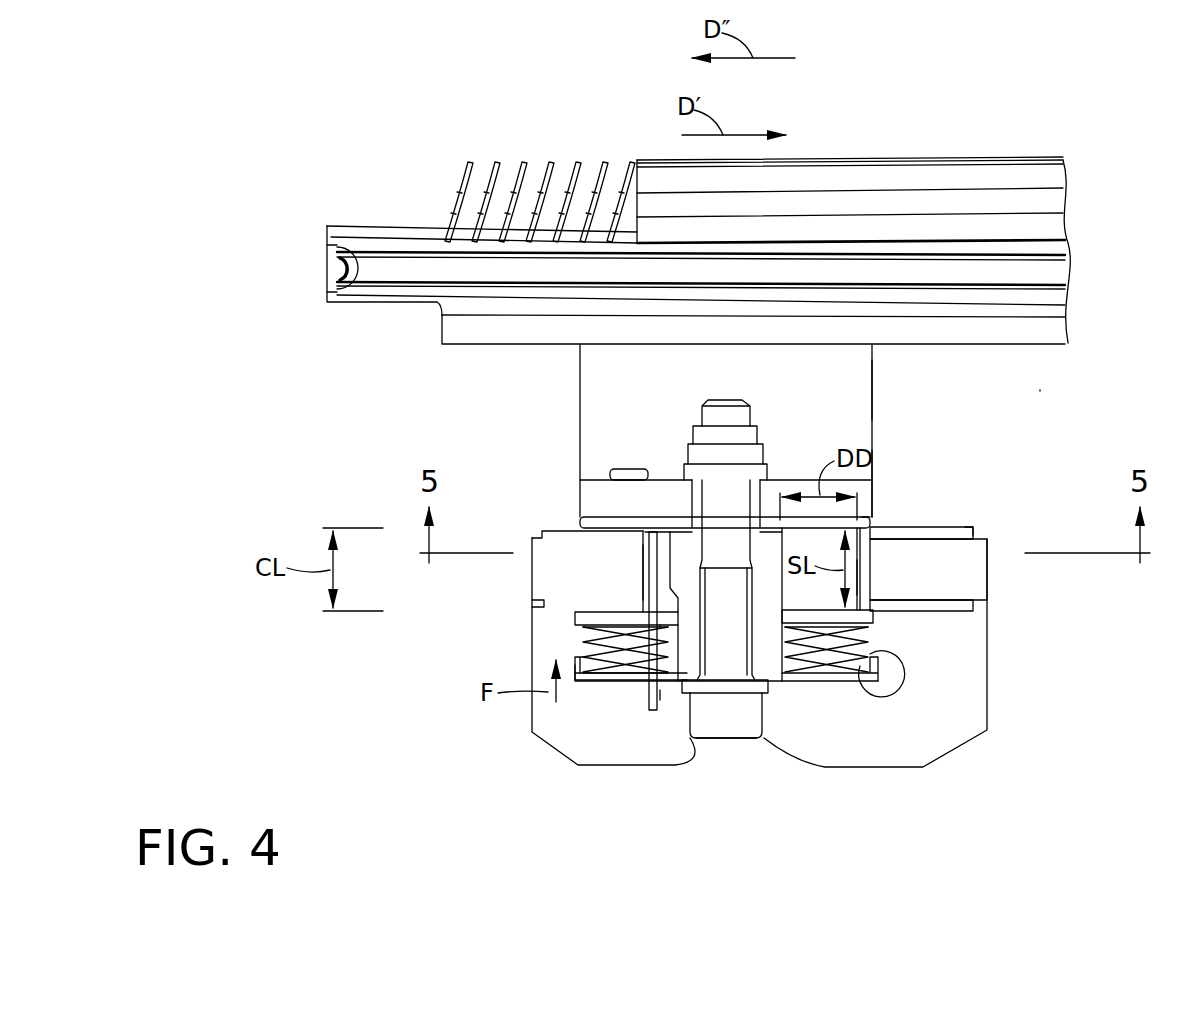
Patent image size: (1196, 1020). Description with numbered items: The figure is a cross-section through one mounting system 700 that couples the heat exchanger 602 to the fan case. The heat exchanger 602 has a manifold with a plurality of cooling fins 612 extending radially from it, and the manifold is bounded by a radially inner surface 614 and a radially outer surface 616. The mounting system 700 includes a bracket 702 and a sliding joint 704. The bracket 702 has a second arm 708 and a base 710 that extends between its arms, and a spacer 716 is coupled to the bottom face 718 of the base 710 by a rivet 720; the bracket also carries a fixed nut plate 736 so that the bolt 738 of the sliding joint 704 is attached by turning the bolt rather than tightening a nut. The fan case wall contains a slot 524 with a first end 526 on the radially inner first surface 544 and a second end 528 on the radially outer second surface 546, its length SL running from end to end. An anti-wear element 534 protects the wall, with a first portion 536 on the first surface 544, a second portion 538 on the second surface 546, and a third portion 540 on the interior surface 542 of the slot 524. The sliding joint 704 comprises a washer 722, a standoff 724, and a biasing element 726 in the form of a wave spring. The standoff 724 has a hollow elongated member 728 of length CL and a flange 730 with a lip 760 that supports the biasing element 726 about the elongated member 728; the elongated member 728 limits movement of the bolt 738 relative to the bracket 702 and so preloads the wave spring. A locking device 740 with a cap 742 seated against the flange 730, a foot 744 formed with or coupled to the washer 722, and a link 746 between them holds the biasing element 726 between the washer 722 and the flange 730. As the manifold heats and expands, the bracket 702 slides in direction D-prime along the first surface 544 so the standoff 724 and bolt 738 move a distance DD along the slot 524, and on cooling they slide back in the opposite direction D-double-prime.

The heat exchanger 602 is at (1070, 140).
The cooling fins 612 is at (460, 168).
The radially inner surface 614 is at (377, 225).
The radially outer surface 616 is at (950, 348).
The mounting system 700 is at (1062, 387).
The bracket 702 is at (576, 381).
The sliding joint 704 is at (911, 653).
The second arm 708 is at (874, 392).
The base 710 is at (873, 495).
The spacer 716 is at (650, 548).
The bottom face 718 is at (640, 540).
The rivet 720 is at (628, 466).
The retainer plate or washer 722 is at (875, 618).
The standoff 724 is at (828, 689).
The biasing element 726 is at (574, 647).
The hollow elongated member 728 is at (770, 667).
The flange 730 is at (578, 688).
The fixed nut plate 736 is at (755, 455).
The bolt 738 is at (765, 750).
The locking device 740 is at (669, 704).
The cap 742 is at (659, 712).
The foot 744 is at (652, 630).
The link 746 is at (642, 684).
The lip 760 is at (896, 697).
The slot 524 is at (987, 580).
The first end 526 is at (871, 527).
The second end 528 is at (861, 610).
The anti-wear element 534 is at (634, 590).
The first portion 536 is at (947, 528).
The second portion 538 is at (532, 603).
The third portion 540 is at (598, 517).
The interior surface 542 is at (877, 575).
The first surface 544 is at (978, 528).
The second surface 546 is at (978, 603).